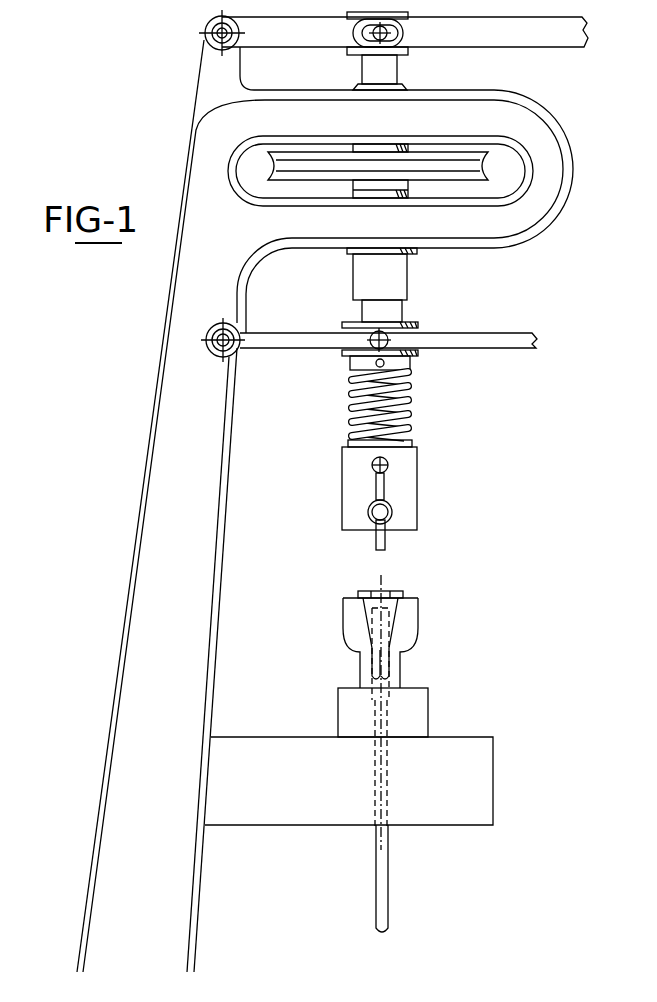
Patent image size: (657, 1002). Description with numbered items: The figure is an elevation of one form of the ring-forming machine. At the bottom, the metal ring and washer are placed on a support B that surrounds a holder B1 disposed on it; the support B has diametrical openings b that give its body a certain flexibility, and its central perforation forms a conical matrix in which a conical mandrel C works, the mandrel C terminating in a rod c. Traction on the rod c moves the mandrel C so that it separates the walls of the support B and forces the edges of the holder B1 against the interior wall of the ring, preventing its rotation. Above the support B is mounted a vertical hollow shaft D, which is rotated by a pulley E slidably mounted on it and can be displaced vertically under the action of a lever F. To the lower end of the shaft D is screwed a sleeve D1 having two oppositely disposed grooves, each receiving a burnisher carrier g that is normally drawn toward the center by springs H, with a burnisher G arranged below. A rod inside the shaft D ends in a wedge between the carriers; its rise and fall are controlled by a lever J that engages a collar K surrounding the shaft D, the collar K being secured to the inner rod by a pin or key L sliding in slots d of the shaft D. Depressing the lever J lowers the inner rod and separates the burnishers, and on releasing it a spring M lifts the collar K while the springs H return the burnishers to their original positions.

The lever F is at (573, 37).
The pulley E is at (478, 167).
The collar K is at (362, 326).
The lever J is at (490, 341).
The pin or key L is at (376, 364).
The slots d is at (376, 404).
The vertical hollow shaft D is at (398, 392).
The spring M is at (404, 426).
The sleeve D1 is at (352, 482).
The springs H is at (386, 493).
The burnisher carrier g is at (392, 511).
The burnisher G is at (376, 546).
The holder B1 is at (397, 598).
The support B is at (350, 628).
The conical mandrel C is at (384, 620).
The diametrical openings b is at (376, 659).
The rod c is at (378, 877).